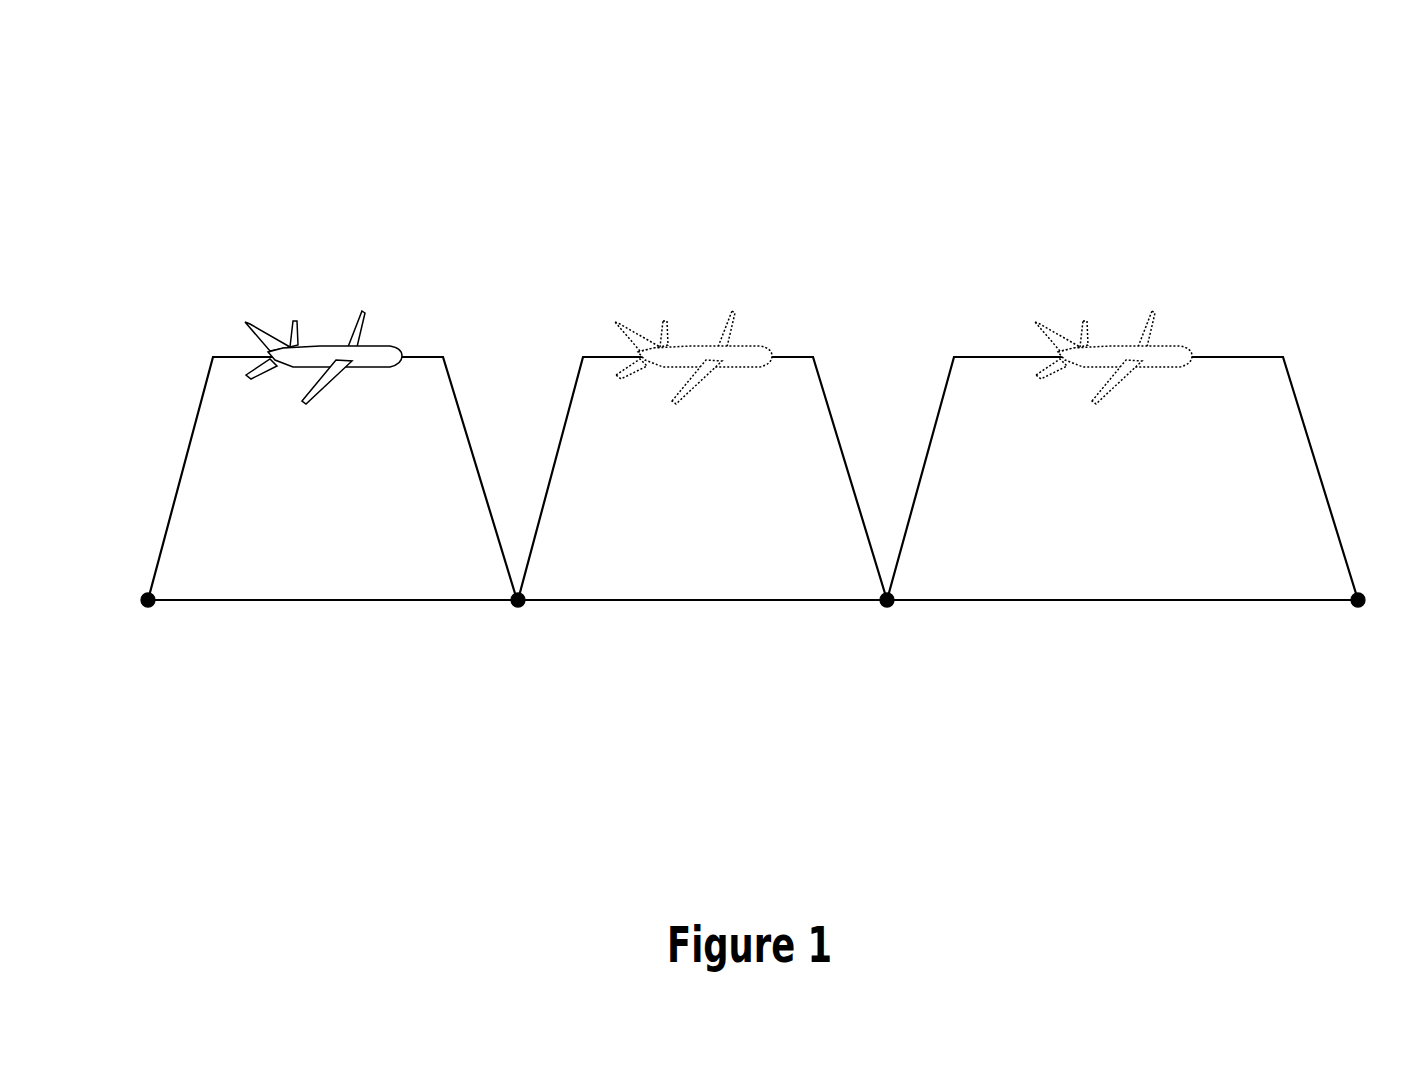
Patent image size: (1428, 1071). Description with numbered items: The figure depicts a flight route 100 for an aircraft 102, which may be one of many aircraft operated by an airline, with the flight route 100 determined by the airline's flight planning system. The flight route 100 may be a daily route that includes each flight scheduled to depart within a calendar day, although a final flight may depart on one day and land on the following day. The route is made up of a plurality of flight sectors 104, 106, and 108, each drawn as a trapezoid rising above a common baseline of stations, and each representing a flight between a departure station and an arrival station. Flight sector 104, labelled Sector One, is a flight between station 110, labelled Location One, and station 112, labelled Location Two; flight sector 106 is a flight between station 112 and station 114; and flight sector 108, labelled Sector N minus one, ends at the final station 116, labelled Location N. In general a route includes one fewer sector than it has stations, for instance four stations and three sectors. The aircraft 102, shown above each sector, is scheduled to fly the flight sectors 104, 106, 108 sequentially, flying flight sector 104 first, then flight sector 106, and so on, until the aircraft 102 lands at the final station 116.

The flight route 100 is at (170, 110).
The aircraft 102 is at (247, 322).
The flight sector 104 is at (172, 322).
The flight sector 106 is at (545, 323).
The flight sector 108 is at (942, 324).
The station 110 is at (148, 595).
The station 112 is at (516, 595).
The station 114 is at (885, 595).
The final station 116 is at (1357, 595).